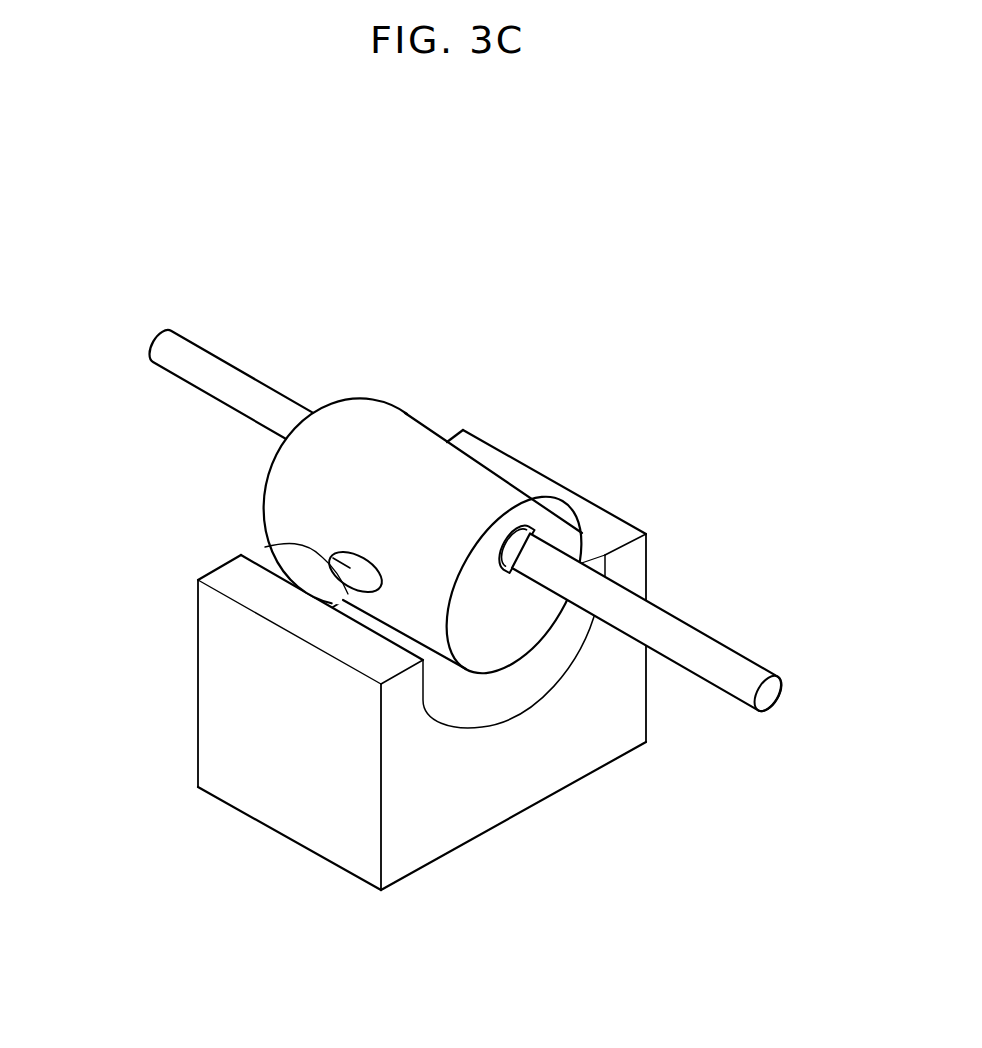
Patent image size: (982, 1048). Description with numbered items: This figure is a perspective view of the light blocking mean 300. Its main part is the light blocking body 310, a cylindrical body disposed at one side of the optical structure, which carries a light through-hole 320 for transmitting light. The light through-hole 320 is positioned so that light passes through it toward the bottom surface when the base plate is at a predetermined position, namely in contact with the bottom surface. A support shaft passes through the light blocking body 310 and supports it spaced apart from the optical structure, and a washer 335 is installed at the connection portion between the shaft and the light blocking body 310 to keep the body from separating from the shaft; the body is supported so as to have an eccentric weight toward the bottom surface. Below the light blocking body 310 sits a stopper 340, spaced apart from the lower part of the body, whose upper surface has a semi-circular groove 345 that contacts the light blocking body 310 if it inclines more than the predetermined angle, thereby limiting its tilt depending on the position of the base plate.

The light blocking mean 300 is at (197, 214).
The light blocking body 310 is at (380, 450).
The light through-hole 320 is at (265, 547).
The washer 335 is at (530, 537).
The stopper 340 is at (494, 660).
The semi-circular groove 345 is at (465, 688).